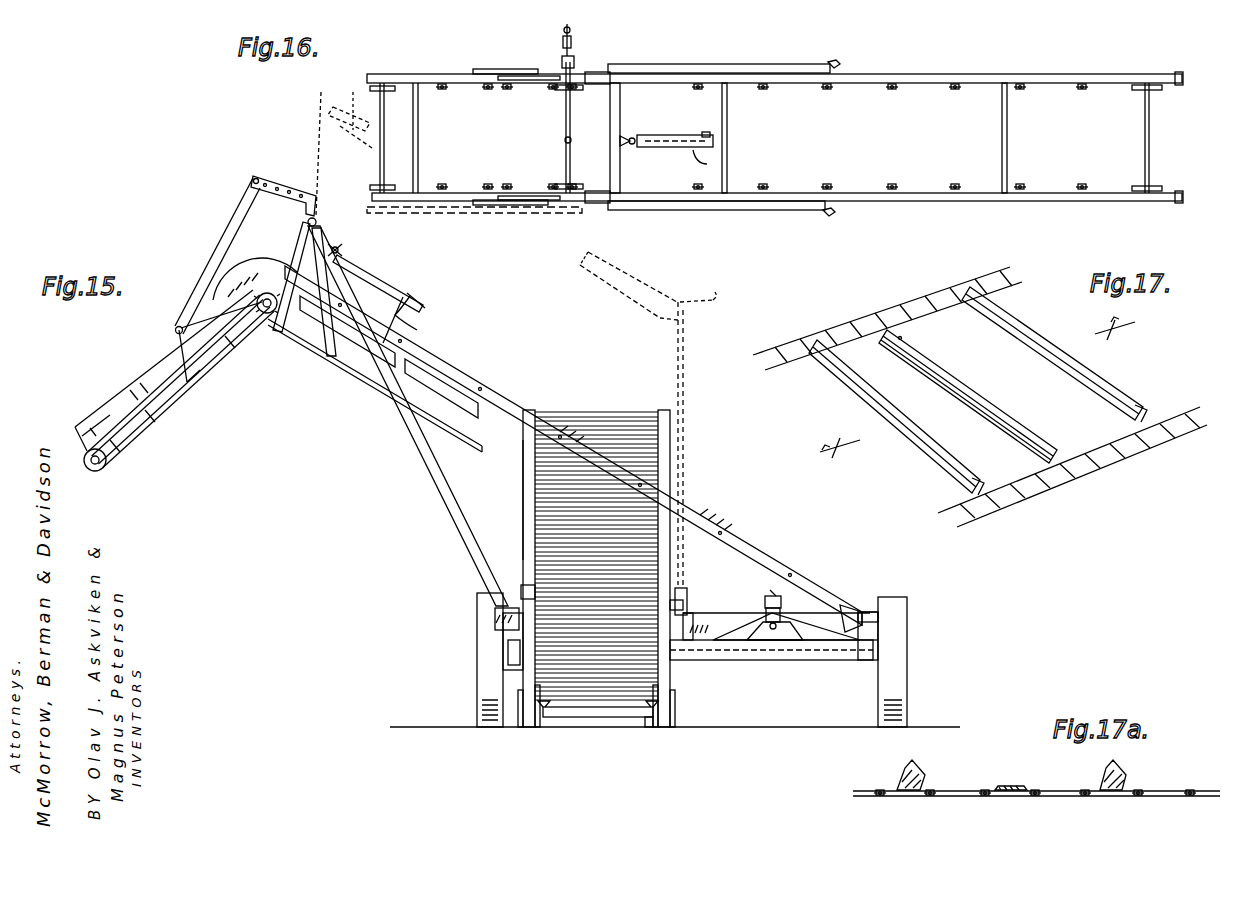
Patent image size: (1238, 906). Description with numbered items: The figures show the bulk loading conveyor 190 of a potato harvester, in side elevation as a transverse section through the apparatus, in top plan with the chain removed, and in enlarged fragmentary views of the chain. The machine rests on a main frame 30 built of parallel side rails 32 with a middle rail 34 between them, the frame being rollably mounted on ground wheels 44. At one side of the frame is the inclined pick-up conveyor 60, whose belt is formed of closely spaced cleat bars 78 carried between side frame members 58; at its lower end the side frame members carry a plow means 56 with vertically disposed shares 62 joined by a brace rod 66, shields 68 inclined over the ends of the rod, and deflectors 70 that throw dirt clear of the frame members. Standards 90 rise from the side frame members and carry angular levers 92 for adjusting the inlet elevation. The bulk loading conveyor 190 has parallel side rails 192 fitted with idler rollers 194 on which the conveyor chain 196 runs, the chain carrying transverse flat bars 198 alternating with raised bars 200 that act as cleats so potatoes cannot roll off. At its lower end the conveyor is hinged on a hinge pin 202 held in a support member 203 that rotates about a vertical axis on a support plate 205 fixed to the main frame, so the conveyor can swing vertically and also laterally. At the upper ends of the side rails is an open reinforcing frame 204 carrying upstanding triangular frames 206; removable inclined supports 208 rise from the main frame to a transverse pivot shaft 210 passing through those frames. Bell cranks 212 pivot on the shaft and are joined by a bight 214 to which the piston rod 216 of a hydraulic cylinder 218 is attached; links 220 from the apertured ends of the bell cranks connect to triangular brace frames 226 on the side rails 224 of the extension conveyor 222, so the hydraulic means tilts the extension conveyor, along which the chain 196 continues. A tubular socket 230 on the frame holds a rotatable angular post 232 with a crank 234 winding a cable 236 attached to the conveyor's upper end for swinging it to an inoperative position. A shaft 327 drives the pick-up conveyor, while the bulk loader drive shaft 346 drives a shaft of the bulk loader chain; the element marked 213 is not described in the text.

In FIG. 15, the main frame 30 is at (868, 611).
In FIG. 15, the side rails 32 is at (495, 610).
In FIG. 15, the middle rail 34 is at (693, 624).
In FIG. 15, the ground wheels 44 is at (478, 672).
In FIG. 15, the plow means 56 is at (656, 728).
In FIG. 15, the side frame members 58 is at (522, 465).
In FIG. 15, the pick-up conveyor 60 is at (521, 494).
In FIG. 15, the shares 62 is at (532, 706).
In FIG. 15, the brace rod 66 is at (584, 718).
In FIG. 15, the shields 68 is at (546, 727).
In FIG. 15, the deflectors 70 is at (520, 712).
In FIG. 15, the cleat bars 78 is at (610, 416).
In FIG. 15, the standards 90 is at (510, 633).
In FIG. 15, the angular levers 92 is at (524, 597).
In FIG. 16, the bulk loading conveyor 190 is at (775, 140).
In FIG. 15, the bulk loading conveyor 190 is at (565, 449).
In FIG. 17, the bulk loading conveyor 190 is at (980, 394).
In FIG. 17A, the bulk loading conveyor 190 is at (1036, 780).
In FIG. 16, the side rails 192 is at (906, 73).
In FIG. 15, the side rails 192 is at (510, 389).
In FIG. 16, the idler rollers 194 is at (447, 183).
In FIG. 17, the conveyor chain 196 is at (871, 314).
In FIG. 17A, the conveyor chain 196 is at (996, 797).
In FIG. 17, the flat bars 198 is at (968, 382).
In FIG. 17A, the flat bars 198 is at (1011, 788).
In FIG. 17, the raised bars 200 is at (1030, 328).
In FIG. 17A, the raised bars 200 is at (912, 766).
In FIG. 15, the hinge pin 202 is at (765, 600).
In FIG. 15, the support member 203 is at (766, 613).
In FIG. 15, the open reinforcing frame 204 is at (352, 368).
In FIG. 15, the support plate 205 is at (790, 641).
In FIG. 16, the triangular frames 206 is at (590, 73).
In FIG. 15, the triangular frames 206 is at (303, 258).
In FIG. 16, the inclined supports 208 is at (650, 64).
In FIG. 15, the inclined supports 208 is at (410, 452).
In FIG. 15, the pivot shaft 210 is at (317, 220).
In FIG. 16, the bell cranks 212 is at (573, 92).
In FIG. 15, the bell cranks 212 is at (262, 178).
In FIG. 16, the cylinder 213 is at (662, 134).
In FIG. 16, the bight 214 is at (610, 118).
In FIG. 16, the piston rod 216 is at (630, 135).
In FIG. 15, the piston rod 216 is at (339, 248).
In FIG. 15, the hydraulic cylinder 218 is at (386, 276).
In FIG. 16, the links 220 is at (468, 84).
In FIG. 15, the links 220 is at (222, 238).
In FIG. 16, the extension conveyor 222 is at (381, 72).
In FIG. 15, the extension conveyor 222 is at (133, 368).
In FIG. 16, the side rails 224 is at (415, 73).
In FIG. 15, the side rails 224 is at (108, 398).
In FIG. 16, the triangular brace frames 226 is at (483, 68).
In FIG. 15, the triangular brace frames 226 is at (178, 320).
In FIG. 15, the tubular socket 230 is at (685, 590).
In FIG. 16, the angular post 232 is at (360, 124).
In FIG. 15, the angular post 232 is at (676, 347).
In FIG. 15, the crank 234 is at (714, 297).
In FIG. 16, the cable 236 is at (350, 104).
In FIG. 15, the cable 236 is at (613, 265).
In FIG. 16, the shaft 327 is at (565, 140).
In FIG. 15, the shaft 327 is at (266, 316).
In FIG. 16, the bulk loader drive shaft 346 is at (572, 28).